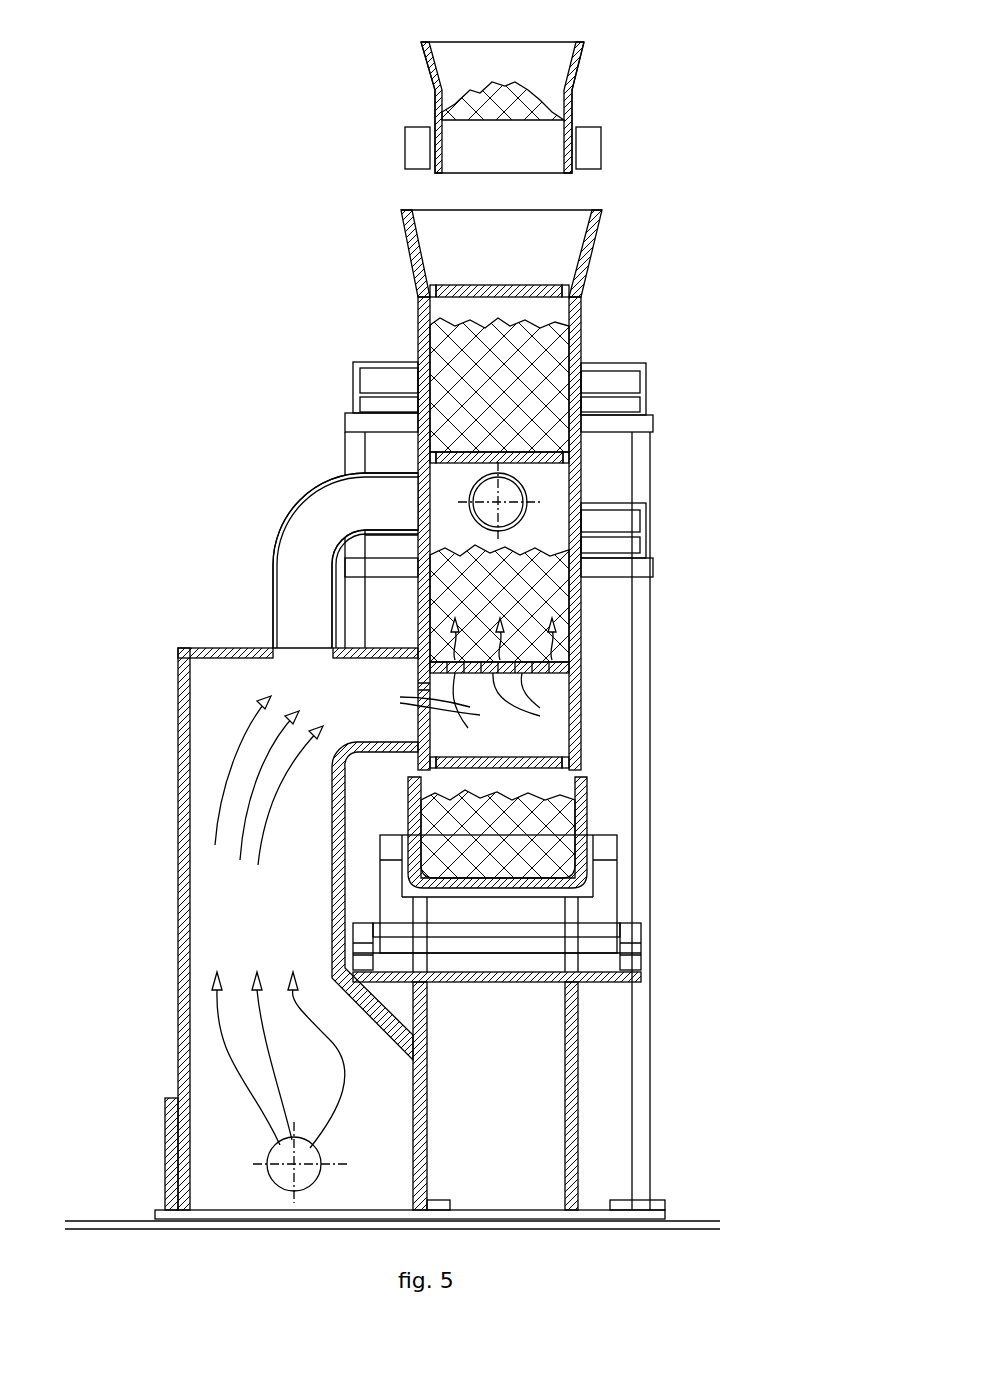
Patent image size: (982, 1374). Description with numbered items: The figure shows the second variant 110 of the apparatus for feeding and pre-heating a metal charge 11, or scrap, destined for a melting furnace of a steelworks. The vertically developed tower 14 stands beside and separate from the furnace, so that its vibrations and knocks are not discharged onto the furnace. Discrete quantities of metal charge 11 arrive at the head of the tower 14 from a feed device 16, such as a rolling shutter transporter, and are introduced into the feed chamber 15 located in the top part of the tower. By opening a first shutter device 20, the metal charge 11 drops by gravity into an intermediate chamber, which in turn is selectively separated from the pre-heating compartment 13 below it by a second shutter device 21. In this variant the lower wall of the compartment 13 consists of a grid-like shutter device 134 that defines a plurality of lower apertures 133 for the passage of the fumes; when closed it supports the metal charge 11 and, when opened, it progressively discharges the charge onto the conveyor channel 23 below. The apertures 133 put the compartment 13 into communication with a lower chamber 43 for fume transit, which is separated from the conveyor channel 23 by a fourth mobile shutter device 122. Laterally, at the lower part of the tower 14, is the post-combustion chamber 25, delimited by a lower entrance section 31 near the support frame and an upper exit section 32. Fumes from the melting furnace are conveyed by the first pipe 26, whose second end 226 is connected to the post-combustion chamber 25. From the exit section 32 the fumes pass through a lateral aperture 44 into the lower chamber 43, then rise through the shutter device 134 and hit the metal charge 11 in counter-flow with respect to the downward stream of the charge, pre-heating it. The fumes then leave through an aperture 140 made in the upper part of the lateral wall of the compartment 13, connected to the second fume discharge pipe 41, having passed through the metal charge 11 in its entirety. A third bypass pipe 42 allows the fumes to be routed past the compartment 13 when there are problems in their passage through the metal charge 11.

The second variant 110 is at (170, 247).
The feed device 16 is at (583, 60).
The feed chamber 15 is at (598, 224).
The first shutter device 20 is at (432, 290).
The tower 14 is at (584, 336).
The second shutter device 21 is at (445, 460).
The aperture 140 is at (530, 486).
The pre-heating compartment 13 is at (575, 515).
The second fume discharge pipe 41 is at (450, 490).
The third bypass pipe 42 is at (273, 568).
The metal charge 11 is at (440, 597).
The shutter device 134 is at (565, 645).
The lateral aperture 44 is at (430, 688).
The lower chamber 43 is at (560, 698).
The lower apertures 133 is at (484, 715).
The fourth mobile shutter device 122 is at (590, 760).
The conveyor channel 23 is at (585, 810).
The upper exit section 32 is at (390, 752).
The post-combustion chamber 25 is at (178, 940).
The second end 226 is at (282, 1178).
The first pipe 26 is at (312, 1170).
The lower entrance section 31 is at (410, 1141).